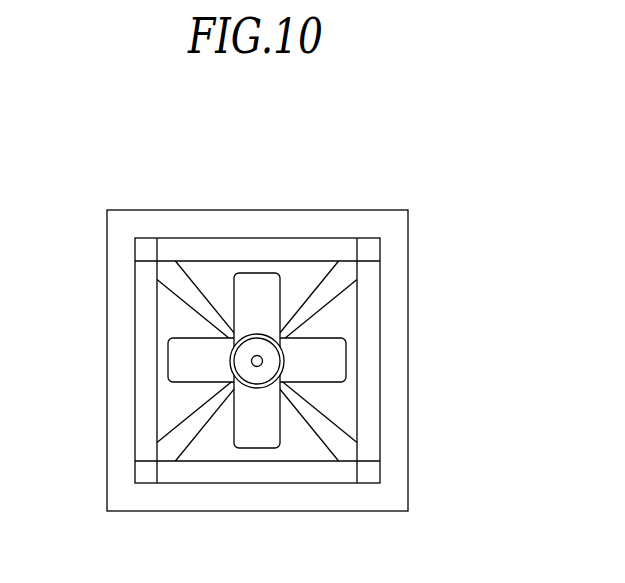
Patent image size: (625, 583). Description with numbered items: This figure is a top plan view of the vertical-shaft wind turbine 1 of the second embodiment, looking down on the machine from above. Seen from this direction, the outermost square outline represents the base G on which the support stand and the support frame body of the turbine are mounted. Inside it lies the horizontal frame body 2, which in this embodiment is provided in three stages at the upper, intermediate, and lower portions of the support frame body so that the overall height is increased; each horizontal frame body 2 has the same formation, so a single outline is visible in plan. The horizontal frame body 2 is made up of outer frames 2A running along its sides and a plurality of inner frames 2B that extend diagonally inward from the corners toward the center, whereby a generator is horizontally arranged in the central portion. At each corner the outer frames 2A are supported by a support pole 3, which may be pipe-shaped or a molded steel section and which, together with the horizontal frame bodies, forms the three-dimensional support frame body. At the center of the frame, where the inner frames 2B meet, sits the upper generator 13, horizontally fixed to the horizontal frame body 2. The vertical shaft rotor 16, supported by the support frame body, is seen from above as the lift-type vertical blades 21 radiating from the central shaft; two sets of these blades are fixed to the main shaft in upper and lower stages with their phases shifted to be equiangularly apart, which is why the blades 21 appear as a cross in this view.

The vertical-shaft wind turbine 1 is at (296, 363).
The horizontal frame body 2 is at (258, 363).
The outer frame 2A is at (258, 238).
The inner frame 2B is at (168, 305).
The support pole 3 is at (134, 248).
The upper generator 13 is at (258, 388).
The vertical shaft rotor 16 is at (189, 363).
The lift-type vertical blade 21 is at (235, 290).
The base G is at (409, 497).